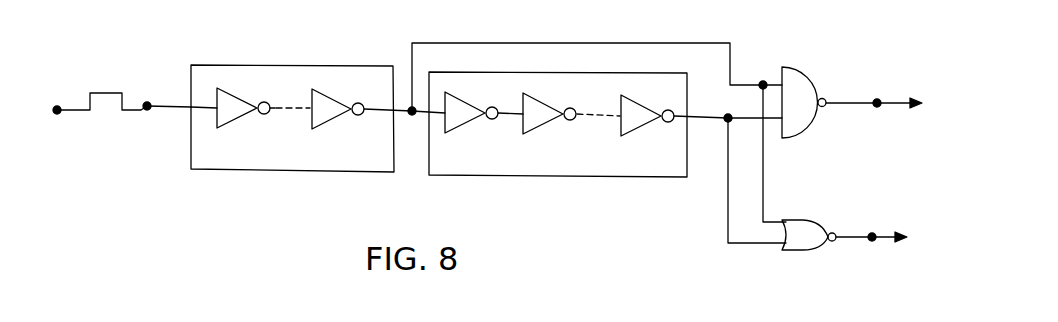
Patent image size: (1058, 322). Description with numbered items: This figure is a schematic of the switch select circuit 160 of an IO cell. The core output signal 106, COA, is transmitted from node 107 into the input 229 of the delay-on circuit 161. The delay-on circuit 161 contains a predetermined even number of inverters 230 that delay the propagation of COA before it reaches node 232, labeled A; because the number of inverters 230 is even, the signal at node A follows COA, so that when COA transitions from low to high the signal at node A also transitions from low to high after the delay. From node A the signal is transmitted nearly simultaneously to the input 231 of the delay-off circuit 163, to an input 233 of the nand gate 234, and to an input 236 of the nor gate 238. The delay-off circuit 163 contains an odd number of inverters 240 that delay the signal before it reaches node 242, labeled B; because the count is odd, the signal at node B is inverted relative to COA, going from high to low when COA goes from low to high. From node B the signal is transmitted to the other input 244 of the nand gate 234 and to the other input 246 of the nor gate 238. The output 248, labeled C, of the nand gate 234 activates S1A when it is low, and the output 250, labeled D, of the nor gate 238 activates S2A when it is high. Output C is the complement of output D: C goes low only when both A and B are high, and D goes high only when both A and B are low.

The core output signal 106 is at (102, 55).
The node 107 is at (148, 102).
The input of delay-on circuit 229 is at (188, 108).
The delay-on circuit 161 is at (260, 171).
The inverters 230 is at (332, 96).
The node A 232 is at (412, 109).
The switch select circuit 160 is at (610, 185).
The input of delay-off circuit 231 is at (441, 114).
The delay-off circuit 163 is at (514, 177).
The inverters 240 is at (620, 100).
The node B 242 is at (726, 122).
The input of nand gate 233 is at (777, 83).
The other input of nand gate 244 is at (778, 127).
The nand gate 234 is at (817, 82).
The output of nand gate 248 is at (910, 63).
The nor gate 238 is at (801, 252).
The other input of nor gate 246 is at (773, 247).
The input of nor gate 236 is at (783, 219).
The output of nor gate 250 is at (873, 203).